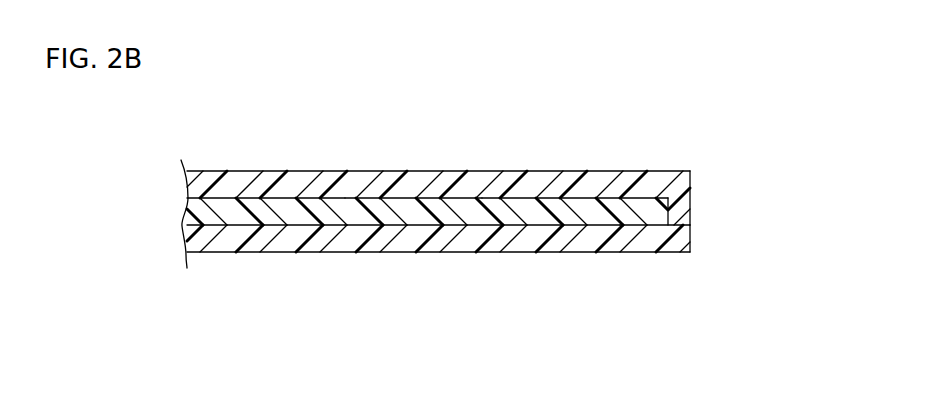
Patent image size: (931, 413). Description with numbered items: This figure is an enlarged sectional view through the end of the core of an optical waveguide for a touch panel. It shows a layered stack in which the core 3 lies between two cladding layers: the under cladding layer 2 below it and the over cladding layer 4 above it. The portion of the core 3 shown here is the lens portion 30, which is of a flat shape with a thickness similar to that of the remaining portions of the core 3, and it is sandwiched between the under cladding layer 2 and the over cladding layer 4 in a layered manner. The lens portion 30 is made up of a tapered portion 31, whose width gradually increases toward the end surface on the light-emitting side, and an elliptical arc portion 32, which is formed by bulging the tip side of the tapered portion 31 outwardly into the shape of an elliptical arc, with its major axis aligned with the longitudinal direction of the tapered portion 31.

The under cladding layer 2 is at (682, 232).
The core 3 is at (212, 213).
The over cladding layer 4 is at (678, 171).
The lens portion 30 is at (345, 316).
The tapered portion 31 is at (364, 212).
The elliptical arc portion 32 is at (598, 210).